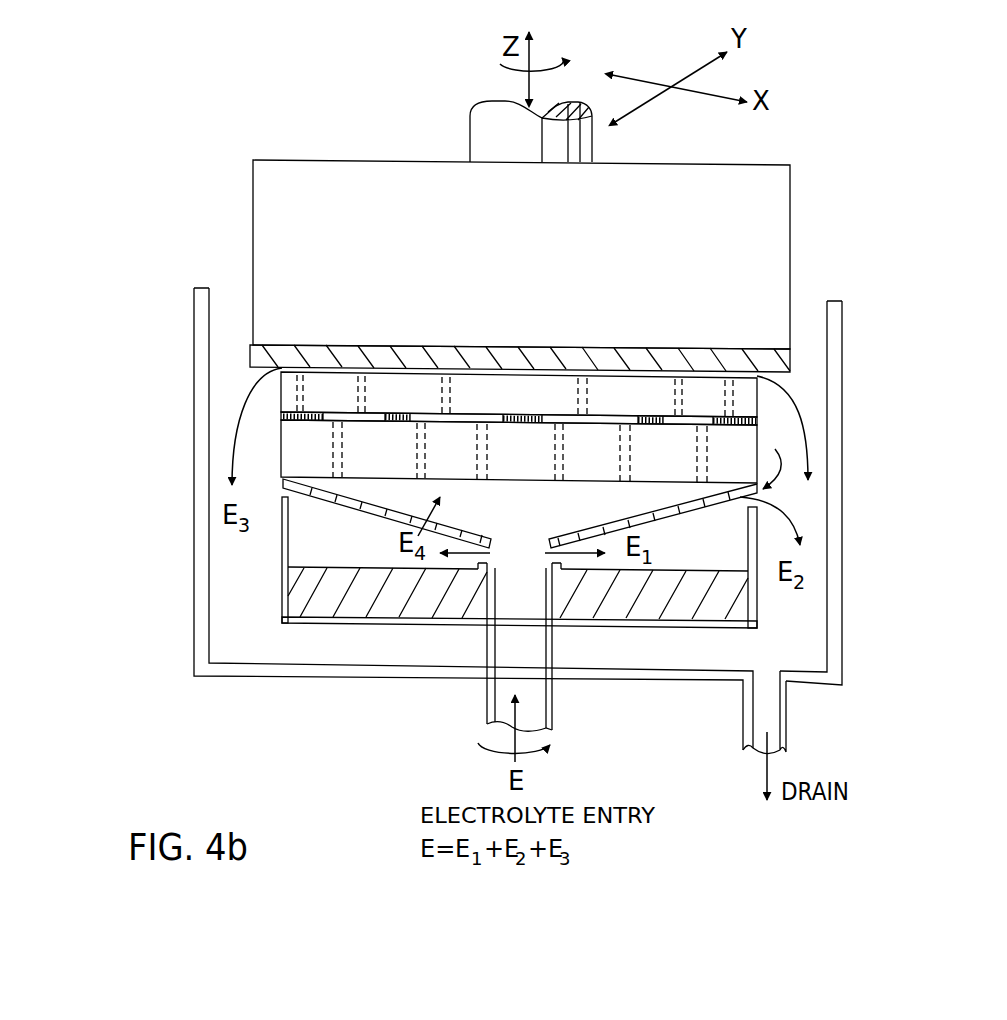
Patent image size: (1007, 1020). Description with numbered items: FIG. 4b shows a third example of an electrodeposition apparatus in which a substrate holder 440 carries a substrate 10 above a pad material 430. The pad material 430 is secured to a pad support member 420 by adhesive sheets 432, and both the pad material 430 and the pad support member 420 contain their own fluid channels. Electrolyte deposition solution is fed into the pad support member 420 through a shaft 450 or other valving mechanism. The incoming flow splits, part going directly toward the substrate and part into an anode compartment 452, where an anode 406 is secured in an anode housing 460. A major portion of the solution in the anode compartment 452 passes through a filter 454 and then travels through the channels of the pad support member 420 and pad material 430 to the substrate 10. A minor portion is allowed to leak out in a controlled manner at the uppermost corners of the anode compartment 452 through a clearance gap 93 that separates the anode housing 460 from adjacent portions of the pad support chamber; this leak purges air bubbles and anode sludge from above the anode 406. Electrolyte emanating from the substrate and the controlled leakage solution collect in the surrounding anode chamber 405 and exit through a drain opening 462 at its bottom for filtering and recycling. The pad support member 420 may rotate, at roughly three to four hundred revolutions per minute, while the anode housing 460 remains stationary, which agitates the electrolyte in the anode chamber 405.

The substrate 10 is at (790, 366).
The clearance gap 93 is at (780, 456).
The anode chamber 405 is at (842, 508).
The anode 406 is at (738, 600).
The pad support member 420 is at (530, 457).
The pad material 430 is at (745, 391).
The adhesive sheets 432 is at (740, 421).
The substrate holder 440 is at (561, 268).
The shaft 450 is at (487, 655).
The anode compartment 452 is at (340, 558).
The filter 454 is at (366, 505).
The anode housing 460 is at (322, 622).
The drain opening 462 is at (777, 720).